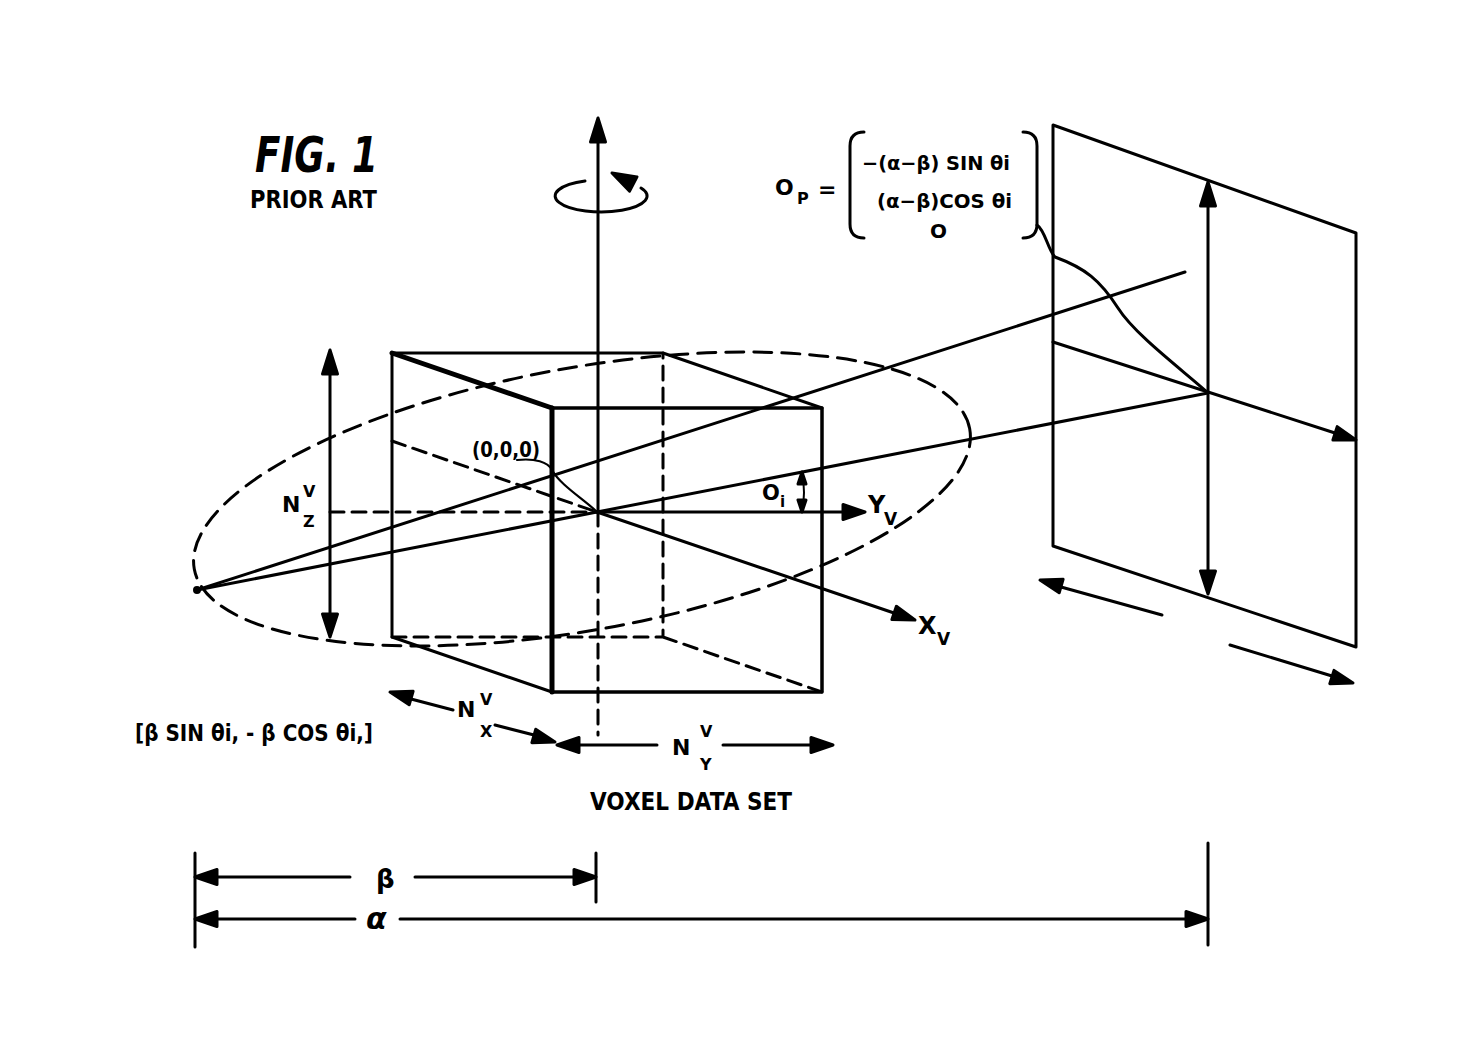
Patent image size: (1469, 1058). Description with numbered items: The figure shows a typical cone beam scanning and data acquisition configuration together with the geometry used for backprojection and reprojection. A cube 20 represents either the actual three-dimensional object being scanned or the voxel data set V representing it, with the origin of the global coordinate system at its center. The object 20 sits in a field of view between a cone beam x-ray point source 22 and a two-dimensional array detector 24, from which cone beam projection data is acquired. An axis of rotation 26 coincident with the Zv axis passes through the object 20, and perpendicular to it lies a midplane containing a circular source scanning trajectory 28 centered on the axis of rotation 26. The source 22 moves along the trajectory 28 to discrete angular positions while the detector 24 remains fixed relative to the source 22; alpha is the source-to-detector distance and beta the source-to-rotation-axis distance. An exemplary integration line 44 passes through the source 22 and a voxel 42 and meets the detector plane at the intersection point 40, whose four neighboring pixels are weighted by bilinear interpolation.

The cube 20 is at (521, 353).
The cone beam x-ray point source 22 is at (197, 590).
The 2D array detector 24 is at (1303, 226).
The axis of rotation 26 is at (597, 261).
The circular source scanning trajectory 28 is at (288, 458).
The intersection point 40 is at (1193, 248).
The voxel 42 is at (686, 348).
The integration line 44 is at (998, 332).